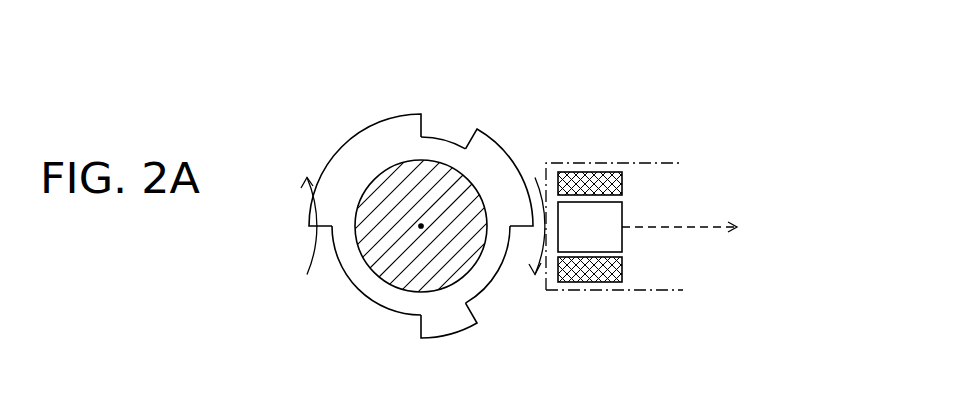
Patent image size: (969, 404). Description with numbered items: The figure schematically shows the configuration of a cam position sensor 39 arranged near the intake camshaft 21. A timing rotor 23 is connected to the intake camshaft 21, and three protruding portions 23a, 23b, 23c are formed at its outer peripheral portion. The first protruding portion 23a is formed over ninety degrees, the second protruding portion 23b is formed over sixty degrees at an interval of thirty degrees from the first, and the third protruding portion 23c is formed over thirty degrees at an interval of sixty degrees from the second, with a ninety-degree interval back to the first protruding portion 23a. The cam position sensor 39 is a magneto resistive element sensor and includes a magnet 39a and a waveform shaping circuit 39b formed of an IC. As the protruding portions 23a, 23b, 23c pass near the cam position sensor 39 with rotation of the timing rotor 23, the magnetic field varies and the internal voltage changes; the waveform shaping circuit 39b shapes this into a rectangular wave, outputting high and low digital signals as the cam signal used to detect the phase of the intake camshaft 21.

The intake camshaft 21 is at (373, 273).
The timing rotor 23 is at (420, 206).
The first protruding portion 23a is at (348, 143).
The second protruding portion 23b is at (508, 152).
The third protruding portion 23c is at (452, 337).
The cam position sensor 39 is at (701, 203).
The magnet 39a is at (608, 168).
The waveform shaping circuit 39b is at (622, 207).